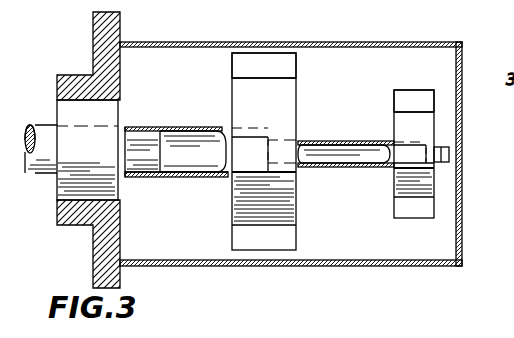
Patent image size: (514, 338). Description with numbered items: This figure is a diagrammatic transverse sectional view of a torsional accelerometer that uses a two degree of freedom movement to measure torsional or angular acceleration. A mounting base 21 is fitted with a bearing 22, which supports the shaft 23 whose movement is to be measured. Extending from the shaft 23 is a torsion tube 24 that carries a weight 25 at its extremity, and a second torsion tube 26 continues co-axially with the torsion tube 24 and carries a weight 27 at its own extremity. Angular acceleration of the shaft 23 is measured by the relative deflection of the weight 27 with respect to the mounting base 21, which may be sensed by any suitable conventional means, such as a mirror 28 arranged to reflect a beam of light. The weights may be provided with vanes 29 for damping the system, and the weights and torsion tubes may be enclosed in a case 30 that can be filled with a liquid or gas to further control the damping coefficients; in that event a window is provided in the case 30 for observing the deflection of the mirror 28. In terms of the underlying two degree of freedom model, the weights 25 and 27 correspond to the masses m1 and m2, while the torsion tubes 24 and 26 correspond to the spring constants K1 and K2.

The mounting base 21 is at (98, 35).
The bearing 22 is at (110, 111).
The shaft 23 is at (45, 136).
The torsion tube 24 is at (192, 127).
The weight 25 is at (278, 98).
The second torsion tube 26 is at (350, 143).
The weight 27 is at (406, 118).
The mirror 28 is at (449, 153).
The vanes 29 is at (240, 62).
The case 30 is at (343, 267).
The spring constant K1 is at (155, 178).
The spring constant K2 is at (329, 170).
The mass m1 is at (243, 202).
The mass m2 is at (401, 197).